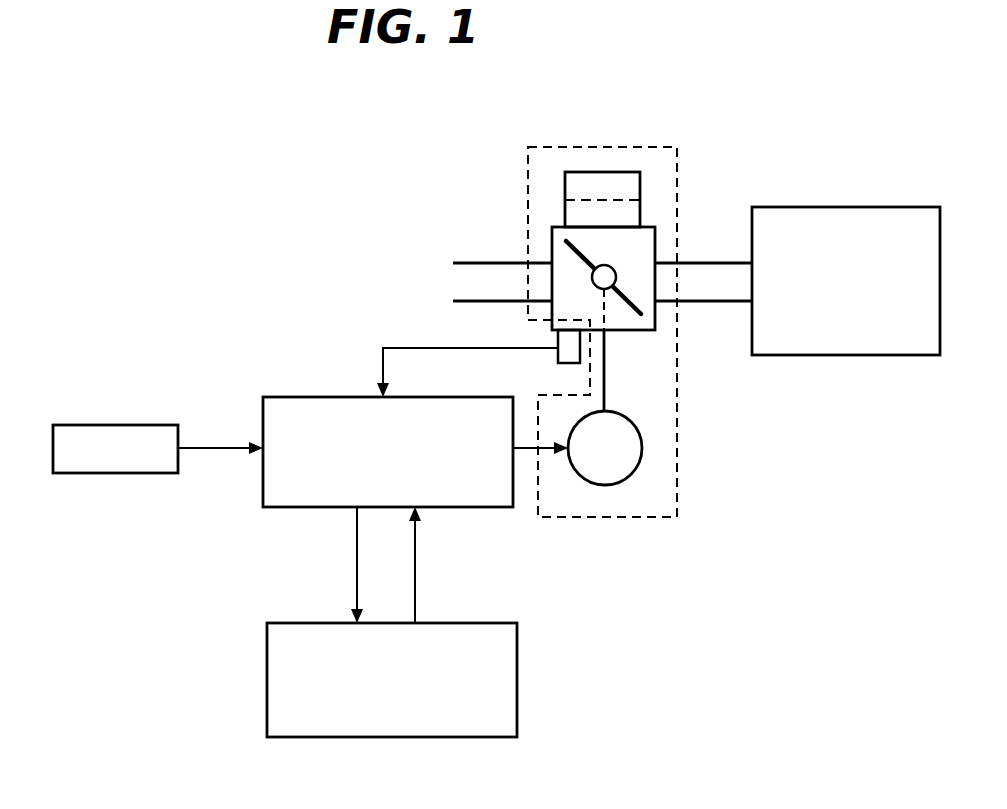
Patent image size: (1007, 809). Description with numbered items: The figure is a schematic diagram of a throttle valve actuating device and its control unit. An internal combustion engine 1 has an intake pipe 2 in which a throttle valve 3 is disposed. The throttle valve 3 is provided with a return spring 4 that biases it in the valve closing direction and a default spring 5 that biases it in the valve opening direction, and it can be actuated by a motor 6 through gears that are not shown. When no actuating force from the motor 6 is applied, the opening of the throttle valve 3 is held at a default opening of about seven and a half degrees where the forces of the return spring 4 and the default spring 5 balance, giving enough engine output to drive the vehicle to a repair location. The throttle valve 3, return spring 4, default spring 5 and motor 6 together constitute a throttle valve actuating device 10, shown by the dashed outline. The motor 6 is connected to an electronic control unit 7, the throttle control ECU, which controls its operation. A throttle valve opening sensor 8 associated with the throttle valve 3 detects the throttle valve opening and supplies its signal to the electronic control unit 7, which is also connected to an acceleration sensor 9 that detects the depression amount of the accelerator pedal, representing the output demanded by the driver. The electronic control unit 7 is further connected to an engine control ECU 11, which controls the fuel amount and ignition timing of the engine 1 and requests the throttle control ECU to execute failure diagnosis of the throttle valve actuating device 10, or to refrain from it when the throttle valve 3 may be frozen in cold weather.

The internal combustion engine 1 is at (844, 205).
The intake pipe 2 is at (722, 301).
The throttle valve 3 is at (627, 297).
The return spring 4 is at (565, 176).
The default spring 5 is at (563, 213).
The motor 6 is at (642, 448).
The electronic control unit 7 is at (327, 397).
The throttle valve opening sensor 8 is at (558, 340).
The acceleration sensor 9 is at (109, 425).
The throttle valve actuating device 10 is at (680, 485).
The engine control ECU 11 is at (303, 623).